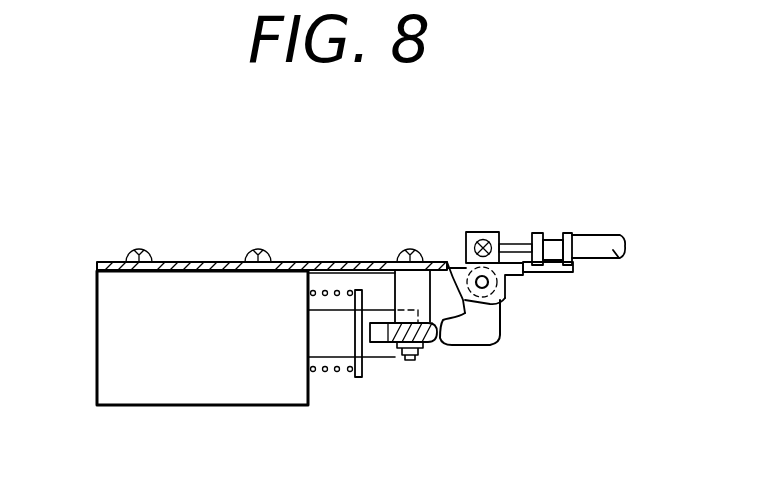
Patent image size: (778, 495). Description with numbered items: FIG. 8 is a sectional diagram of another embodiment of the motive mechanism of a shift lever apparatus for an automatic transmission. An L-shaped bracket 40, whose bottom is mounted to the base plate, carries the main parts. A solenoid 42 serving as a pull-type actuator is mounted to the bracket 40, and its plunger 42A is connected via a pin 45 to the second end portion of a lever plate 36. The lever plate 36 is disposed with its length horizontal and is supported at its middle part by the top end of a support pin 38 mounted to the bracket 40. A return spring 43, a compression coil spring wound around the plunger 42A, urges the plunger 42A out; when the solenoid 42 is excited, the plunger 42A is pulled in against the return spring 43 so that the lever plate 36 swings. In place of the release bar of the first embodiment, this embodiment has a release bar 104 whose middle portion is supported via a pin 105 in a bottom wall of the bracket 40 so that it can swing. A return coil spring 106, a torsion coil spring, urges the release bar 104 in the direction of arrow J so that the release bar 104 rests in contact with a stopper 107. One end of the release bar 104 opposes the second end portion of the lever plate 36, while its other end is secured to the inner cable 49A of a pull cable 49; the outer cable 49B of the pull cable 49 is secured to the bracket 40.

The L-shaped bracket 40 is at (200, 262).
The solenoid 42 is at (117, 328).
The plunger 42A is at (320, 337).
The return spring 43 is at (343, 372).
The support pin 38 is at (393, 290).
The lever plate 36 is at (432, 340).
The pin 45 is at (403, 362).
The release bar 104 is at (480, 232).
The pin 105 is at (462, 268).
The stopper 107 is at (505, 278).
The return coil spring 106 is at (502, 302).
The arrow J is at (470, 375).
The inner cable 49A is at (510, 245).
The pull cable 49 is at (598, 233).
The outer cable 49B is at (613, 255).